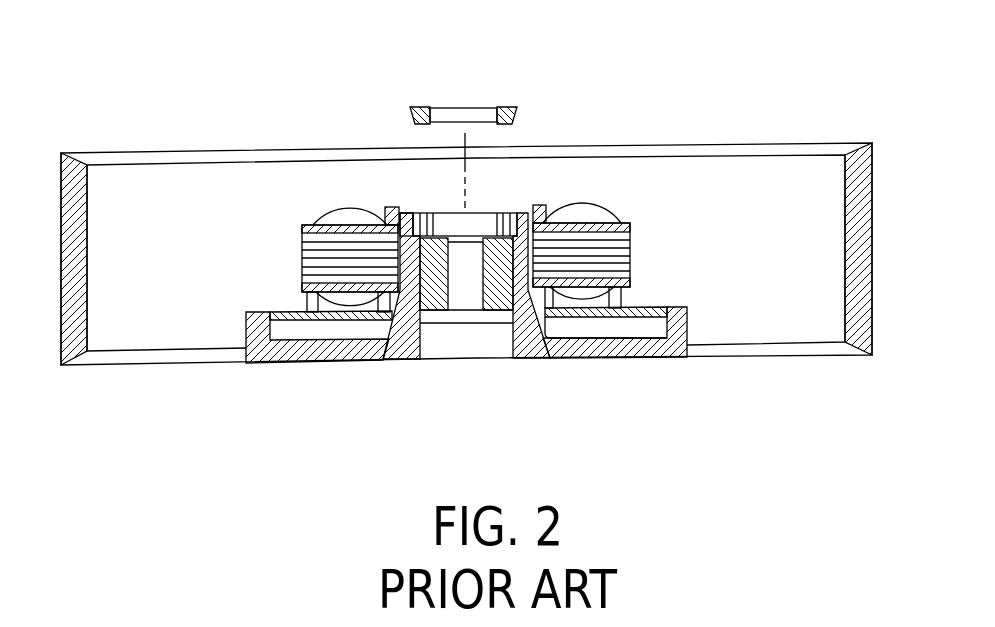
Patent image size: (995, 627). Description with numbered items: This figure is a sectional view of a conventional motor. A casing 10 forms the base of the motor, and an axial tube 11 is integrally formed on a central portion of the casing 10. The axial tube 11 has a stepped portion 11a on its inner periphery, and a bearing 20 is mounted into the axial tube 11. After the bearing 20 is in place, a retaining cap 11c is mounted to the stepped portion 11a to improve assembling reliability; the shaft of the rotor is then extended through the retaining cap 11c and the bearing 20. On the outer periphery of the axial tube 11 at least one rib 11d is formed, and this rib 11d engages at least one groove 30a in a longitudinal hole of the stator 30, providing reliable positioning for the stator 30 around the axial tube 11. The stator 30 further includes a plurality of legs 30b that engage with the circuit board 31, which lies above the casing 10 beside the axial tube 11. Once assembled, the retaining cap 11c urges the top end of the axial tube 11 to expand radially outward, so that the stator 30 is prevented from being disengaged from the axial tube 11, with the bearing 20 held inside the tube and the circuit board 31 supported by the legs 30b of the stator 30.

The casing 10 is at (562, 347).
The axial tube 11 is at (410, 265).
The stepped portion 11a is at (515, 214).
The retaining cap 11c is at (507, 107).
The rib 11d is at (403, 212).
The bearing 20 is at (500, 290).
The stator 30 is at (612, 260).
The groove 30a is at (403, 212).
The legs 30b is at (620, 297).
The circuit board 31 is at (598, 312).